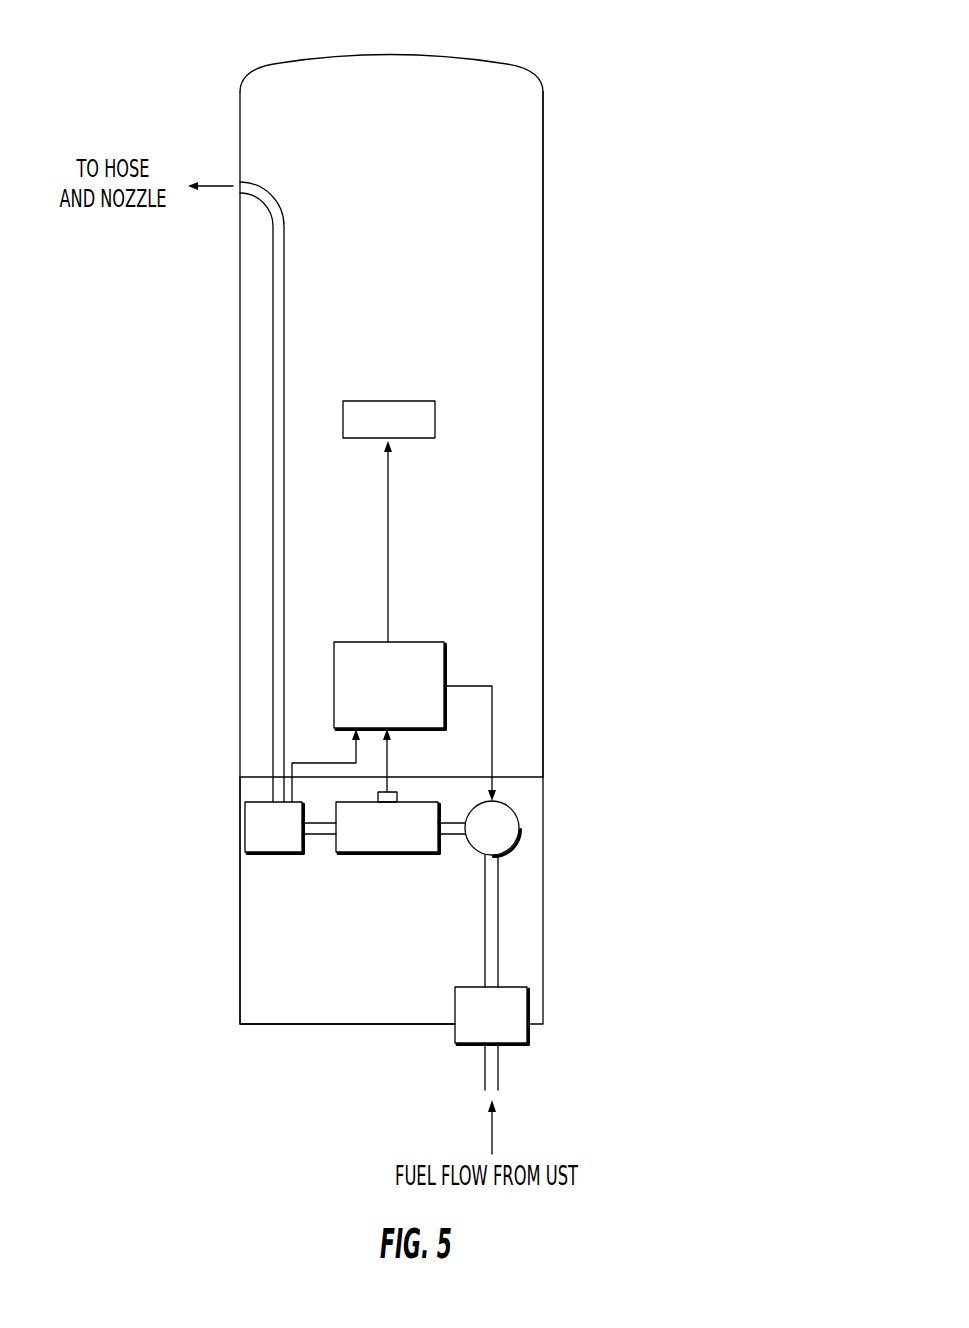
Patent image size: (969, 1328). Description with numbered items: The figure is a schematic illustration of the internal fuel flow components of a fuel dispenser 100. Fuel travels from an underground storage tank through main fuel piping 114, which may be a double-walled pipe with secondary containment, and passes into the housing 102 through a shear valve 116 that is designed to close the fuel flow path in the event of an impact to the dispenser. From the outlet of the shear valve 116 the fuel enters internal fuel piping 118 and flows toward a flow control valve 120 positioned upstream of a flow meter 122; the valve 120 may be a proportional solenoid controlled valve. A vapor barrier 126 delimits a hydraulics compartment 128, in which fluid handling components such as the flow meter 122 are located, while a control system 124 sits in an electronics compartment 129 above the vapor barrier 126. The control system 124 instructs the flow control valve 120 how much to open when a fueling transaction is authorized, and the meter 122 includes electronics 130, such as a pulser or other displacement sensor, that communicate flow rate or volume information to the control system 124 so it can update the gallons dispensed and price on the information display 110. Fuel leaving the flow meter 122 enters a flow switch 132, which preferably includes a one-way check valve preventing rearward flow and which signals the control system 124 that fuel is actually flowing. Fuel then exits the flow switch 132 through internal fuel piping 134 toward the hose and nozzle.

The fuel dispenser 100 is at (598, 72).
The housing 102 is at (477, 58).
The electronics compartment 129 is at (530, 263).
The internal fuel piping 134 is at (273, 450).
The information display 110 is at (385, 401).
The control system 124 is at (356, 642).
The vapor barrier 126 is at (506, 776).
The electronics 130 is at (378, 796).
The flow switch 132 is at (246, 830).
The flow meter 122 is at (344, 842).
The flow control valve 120 is at (520, 836).
The internal fuel piping 118 is at (500, 960).
The shear valve 116 is at (528, 1016).
The main fuel piping 114 is at (493, 1078).
The hydraulics compartment 128 is at (255, 922).